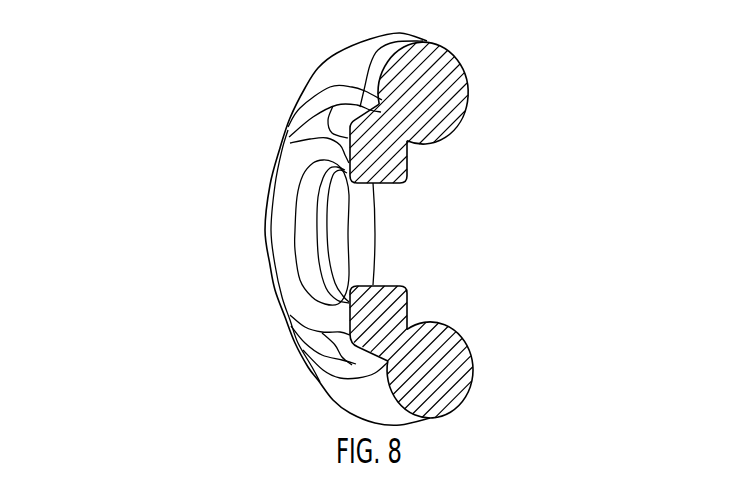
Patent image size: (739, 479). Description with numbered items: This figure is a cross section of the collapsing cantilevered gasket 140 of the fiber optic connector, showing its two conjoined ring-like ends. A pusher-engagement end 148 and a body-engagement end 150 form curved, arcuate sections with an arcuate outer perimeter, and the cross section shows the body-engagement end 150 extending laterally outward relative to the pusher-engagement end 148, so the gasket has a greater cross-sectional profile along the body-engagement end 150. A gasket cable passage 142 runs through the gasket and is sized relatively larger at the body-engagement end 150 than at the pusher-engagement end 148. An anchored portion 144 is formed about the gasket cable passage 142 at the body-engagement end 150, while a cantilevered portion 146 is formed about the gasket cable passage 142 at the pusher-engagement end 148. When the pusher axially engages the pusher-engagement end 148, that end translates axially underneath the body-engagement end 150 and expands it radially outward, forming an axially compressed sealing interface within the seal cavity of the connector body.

The collapsing cantilevered gasket 140 is at (136, 118).
The gasket cable passage 142 is at (412, 238).
The anchored portion 144 is at (365, 258).
The cantilevered portion 146 is at (307, 232).
The pusher-engagement end 148 is at (289, 132).
The body-engagement end 150 is at (468, 56).